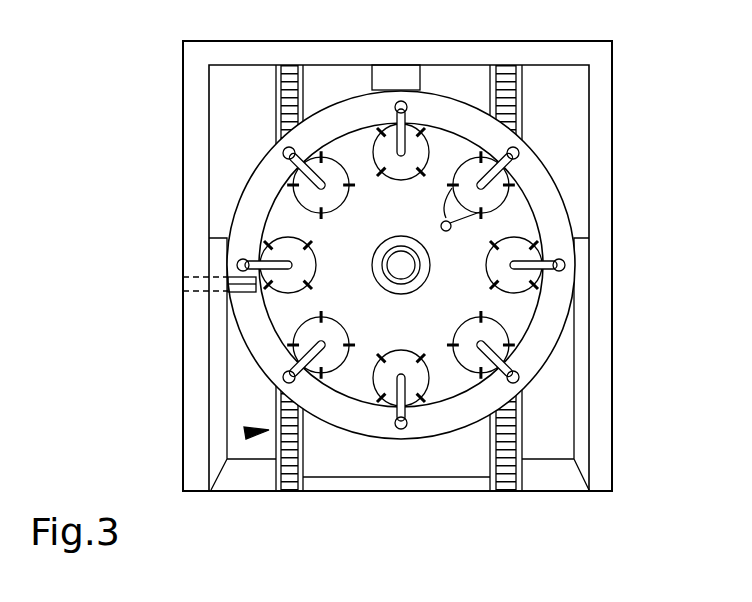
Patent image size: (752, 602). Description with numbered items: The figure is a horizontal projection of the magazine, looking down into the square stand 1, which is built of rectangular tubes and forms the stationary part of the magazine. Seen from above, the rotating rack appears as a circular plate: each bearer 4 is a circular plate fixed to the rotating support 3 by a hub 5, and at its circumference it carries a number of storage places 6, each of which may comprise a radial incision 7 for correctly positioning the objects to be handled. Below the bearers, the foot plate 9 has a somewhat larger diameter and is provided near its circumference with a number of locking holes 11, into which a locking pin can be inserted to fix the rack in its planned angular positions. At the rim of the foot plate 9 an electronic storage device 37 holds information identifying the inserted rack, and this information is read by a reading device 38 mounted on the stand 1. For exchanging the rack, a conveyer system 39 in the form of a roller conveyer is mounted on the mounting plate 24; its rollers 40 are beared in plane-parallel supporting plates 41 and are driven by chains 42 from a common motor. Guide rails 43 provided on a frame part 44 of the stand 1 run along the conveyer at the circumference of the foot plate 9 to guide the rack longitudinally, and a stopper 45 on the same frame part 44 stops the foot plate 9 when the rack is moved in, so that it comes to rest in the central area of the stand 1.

The stand 1 is at (152, 95).
The rotating support 3 is at (401, 270).
The bearer 4 is at (535, 320).
The hub 5 is at (429, 277).
The storage place 6 is at (538, 247).
The radial incision 7 is at (497, 161).
The foot plate 9 is at (547, 362).
The locking hole 11 is at (239, 260).
The mounting plate 24 is at (395, 478).
The electronic storage device 37 is at (228, 290).
The reading device 38 is at (187, 288).
The conveyer system 39 is at (250, 433).
The rollers 40 is at (291, 491).
The supporting plate 41 is at (281, 480).
The chain 42 is at (306, 490).
The guide rail 43 is at (217, 385).
The frame part 44 is at (197, 207).
The stopper 45 is at (407, 73).